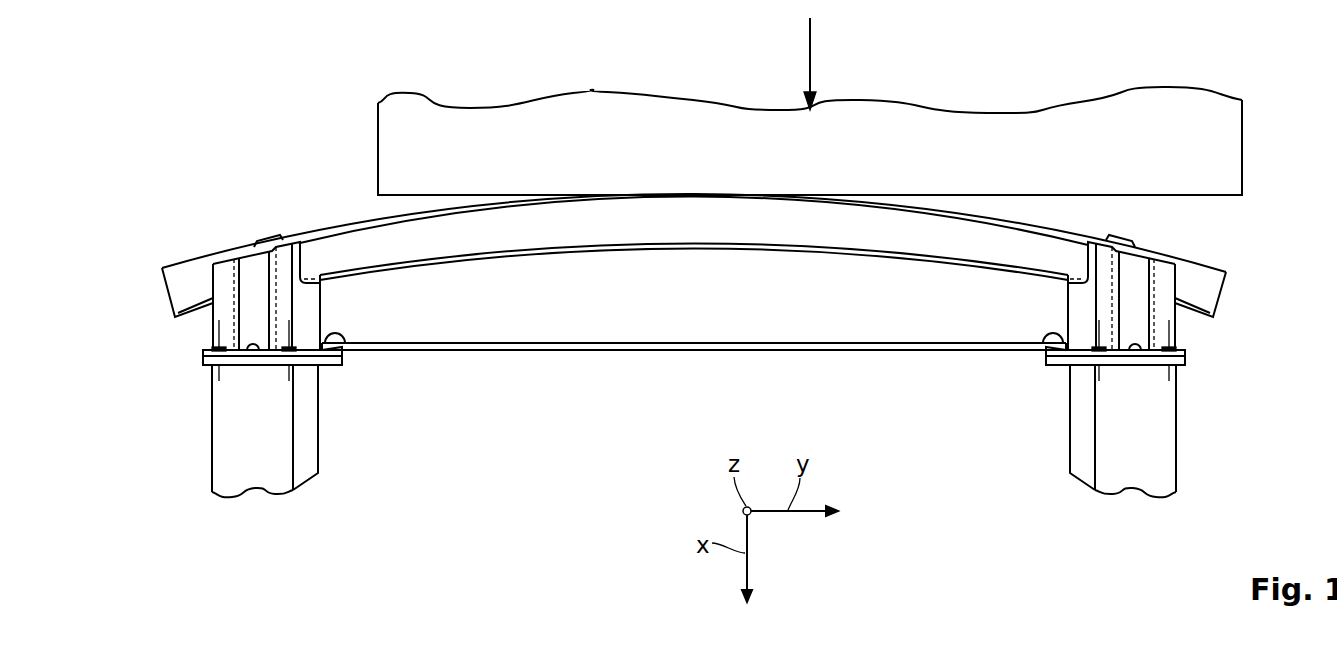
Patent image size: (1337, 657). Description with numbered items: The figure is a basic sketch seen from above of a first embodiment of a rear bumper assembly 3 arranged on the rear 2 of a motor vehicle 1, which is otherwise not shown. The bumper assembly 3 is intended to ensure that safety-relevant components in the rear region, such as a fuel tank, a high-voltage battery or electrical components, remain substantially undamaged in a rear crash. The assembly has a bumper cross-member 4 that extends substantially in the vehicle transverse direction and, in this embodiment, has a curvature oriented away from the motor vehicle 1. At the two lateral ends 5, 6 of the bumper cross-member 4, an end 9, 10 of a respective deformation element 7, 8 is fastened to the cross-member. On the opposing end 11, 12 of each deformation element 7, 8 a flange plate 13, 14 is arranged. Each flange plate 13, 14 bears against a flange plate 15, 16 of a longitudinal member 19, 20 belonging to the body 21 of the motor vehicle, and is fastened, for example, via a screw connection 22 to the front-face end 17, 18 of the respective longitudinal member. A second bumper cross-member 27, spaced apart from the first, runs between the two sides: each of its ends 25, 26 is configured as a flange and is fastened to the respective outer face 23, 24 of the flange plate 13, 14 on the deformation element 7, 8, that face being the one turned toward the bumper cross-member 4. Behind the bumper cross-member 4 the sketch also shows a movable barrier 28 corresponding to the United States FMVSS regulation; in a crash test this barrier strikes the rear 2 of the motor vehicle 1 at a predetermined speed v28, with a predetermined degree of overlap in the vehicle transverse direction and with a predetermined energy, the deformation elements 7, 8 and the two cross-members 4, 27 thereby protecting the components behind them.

The motor vehicle 1 is at (708, 182).
The rear 2 is at (708, 182).
The bumper assembly 3 is at (330, 220).
The bumper cross-member 4 is at (550, 213).
The lateral end 5 is at (175, 277).
The lateral end 6 is at (1215, 277).
The deformation element 7 is at (221, 355).
The deformation element 8 is at (1170, 367).
The end of deformation element 9 is at (223, 270).
The end of deformation element 10 is at (1165, 270).
The end of deformation element 11 is at (206, 351).
The end of deformation element 12 is at (1182, 351).
The flange plate 13 is at (206, 360).
The flange plate 14 is at (1182, 360).
The flange plate 15 is at (171, 431).
The flange plate 16 is at (1216, 431).
The end 17 is at (171, 431).
The end 18 is at (1216, 431).
The longitudinal member 19 is at (207, 370).
The longitudinal member 20 is at (1181, 370).
The body 21 is at (305, 432).
The screw connection 22 is at (217, 329).
The outer face 23 is at (262, 368).
The outer face 24 is at (1126, 368).
The end of second bumper cross-member 25 is at (345, 340).
The end of second bumper cross-member 26 is at (1043, 340).
The second bumper cross-member 27 is at (668, 352).
The movable barrier 28 is at (948, 117).
The predetermined speed v28 is at (812, 47).